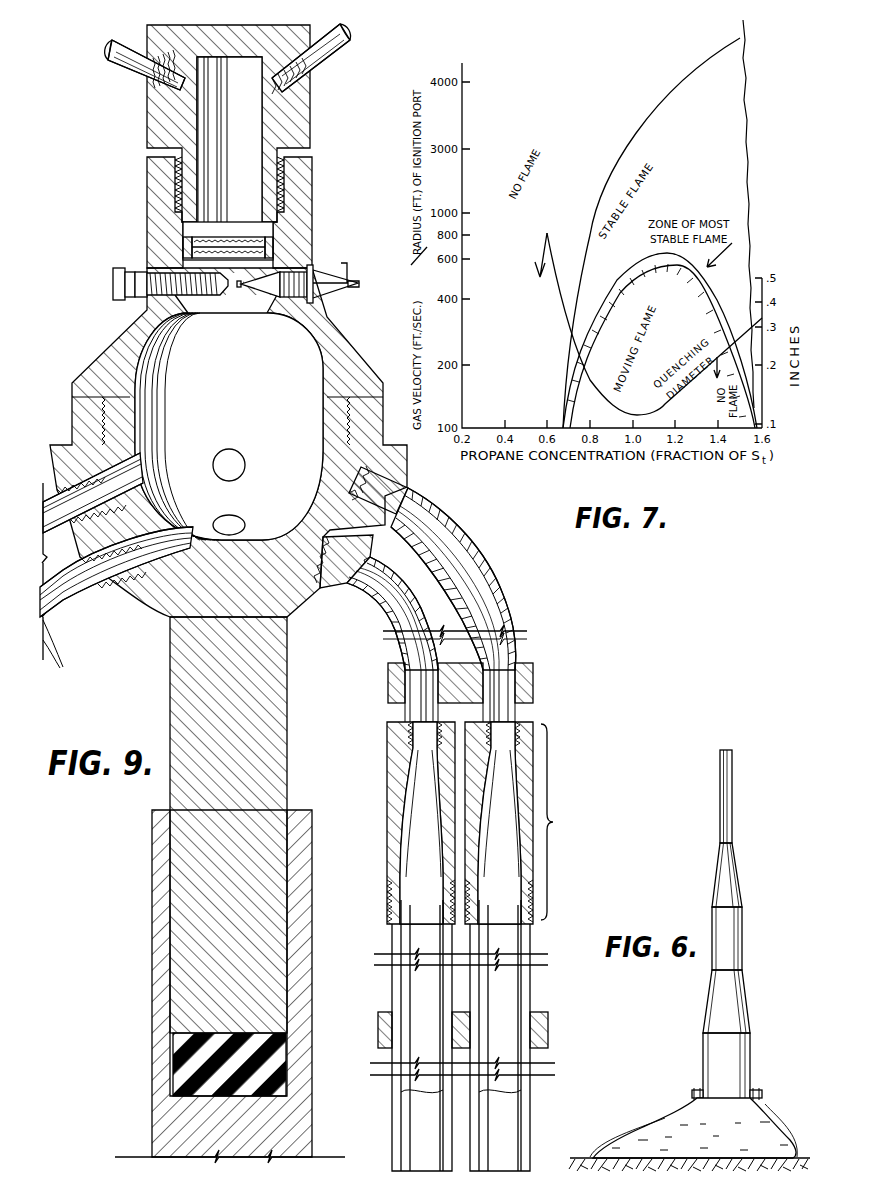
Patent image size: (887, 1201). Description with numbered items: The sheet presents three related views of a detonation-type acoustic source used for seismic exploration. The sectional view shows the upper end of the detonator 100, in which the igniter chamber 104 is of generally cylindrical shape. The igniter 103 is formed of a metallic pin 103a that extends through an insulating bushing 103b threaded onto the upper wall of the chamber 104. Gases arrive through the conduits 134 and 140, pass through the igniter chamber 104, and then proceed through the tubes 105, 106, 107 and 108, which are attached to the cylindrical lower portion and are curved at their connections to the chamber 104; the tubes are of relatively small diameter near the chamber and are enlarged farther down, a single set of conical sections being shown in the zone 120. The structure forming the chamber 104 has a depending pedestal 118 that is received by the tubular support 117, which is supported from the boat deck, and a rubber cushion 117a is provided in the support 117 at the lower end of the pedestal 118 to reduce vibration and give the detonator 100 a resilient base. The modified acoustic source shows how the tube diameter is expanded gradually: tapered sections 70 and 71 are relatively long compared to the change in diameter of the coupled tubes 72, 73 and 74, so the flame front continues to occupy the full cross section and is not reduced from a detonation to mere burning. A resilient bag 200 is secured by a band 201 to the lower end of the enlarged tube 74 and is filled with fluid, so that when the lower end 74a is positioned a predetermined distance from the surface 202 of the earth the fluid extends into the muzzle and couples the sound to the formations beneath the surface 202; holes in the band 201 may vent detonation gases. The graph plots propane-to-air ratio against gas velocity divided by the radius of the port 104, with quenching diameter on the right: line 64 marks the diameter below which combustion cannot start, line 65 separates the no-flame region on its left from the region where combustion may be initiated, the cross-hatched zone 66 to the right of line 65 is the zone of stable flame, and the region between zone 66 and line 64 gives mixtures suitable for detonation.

In FIG. 7, the line 64 is at (585, 365).
In FIG. 7, the line 65 is at (580, 282).
In FIG. 7, the cross-hatched zone 66 is at (635, 282).
In FIG. 6, the tapered section 70 is at (728, 877).
In FIG. 6, the tapered section 71 is at (733, 1017).
In FIG. 6, the coupled tube 72 is at (730, 790).
In FIG. 6, the coupled tube 73 is at (733, 962).
In FIG. 6, the enlarged tube 74 is at (743, 1060).
In FIG. 6, the lower end 74a is at (750, 1137).
In FIG. 6, the resilient bag 200 is at (642, 1132).
In FIG. 6, the band 201 is at (693, 1094).
In FIG. 6, the surface of the earth 202 is at (582, 1157).
In FIG. 9, the detonator 100 is at (132, 136).
In FIG. 9, the igniter 103 is at (350, 249).
In FIG. 9, the metallic pin 103a is at (347, 272).
In FIG. 9, the insulating bushing 103b is at (315, 299).
In FIG. 9, the igniter chamber 104 is at (275, 381).
In FIG. 9, the tube 105 is at (40, 527).
In FIG. 9, the tube 106 is at (55, 618).
In FIG. 9, the tube 107 is at (377, 583).
In FIG. 9, the tube 108 is at (463, 522).
In FIG. 9, the tubular support 117 is at (153, 1045).
In FIG. 9, the rubber cushion 117a is at (290, 1072).
In FIG. 9, the pedestal 118 is at (176, 668).
In FIG. 9, the zone 120 is at (480, 898).
In FIG. 9, the conduit 134 is at (127, 71).
In FIG. 9, the conduit 140 is at (332, 38).